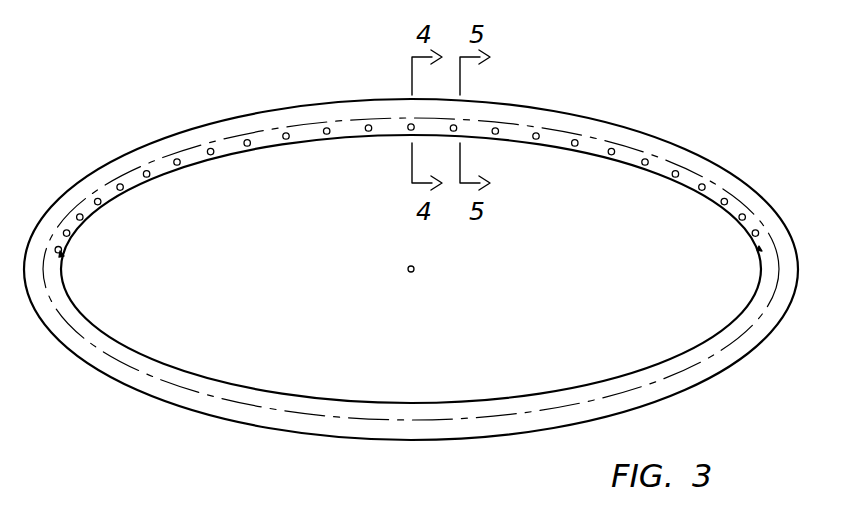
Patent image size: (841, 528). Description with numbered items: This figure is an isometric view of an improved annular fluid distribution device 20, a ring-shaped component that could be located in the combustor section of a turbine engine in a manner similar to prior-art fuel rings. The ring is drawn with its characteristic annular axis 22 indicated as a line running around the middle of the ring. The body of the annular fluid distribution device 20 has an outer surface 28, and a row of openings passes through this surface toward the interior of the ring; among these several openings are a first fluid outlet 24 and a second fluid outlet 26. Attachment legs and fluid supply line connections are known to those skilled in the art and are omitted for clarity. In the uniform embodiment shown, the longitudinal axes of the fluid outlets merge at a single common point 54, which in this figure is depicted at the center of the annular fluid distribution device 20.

The annular fluid distribution device 20 is at (186, 130).
The annular axis 22 is at (168, 385).
The first fluid outlet 24 is at (407, 127).
The second fluid outlet 26 is at (457, 128).
The outer surface 28 is at (760, 270).
The common point 54 is at (409, 266).